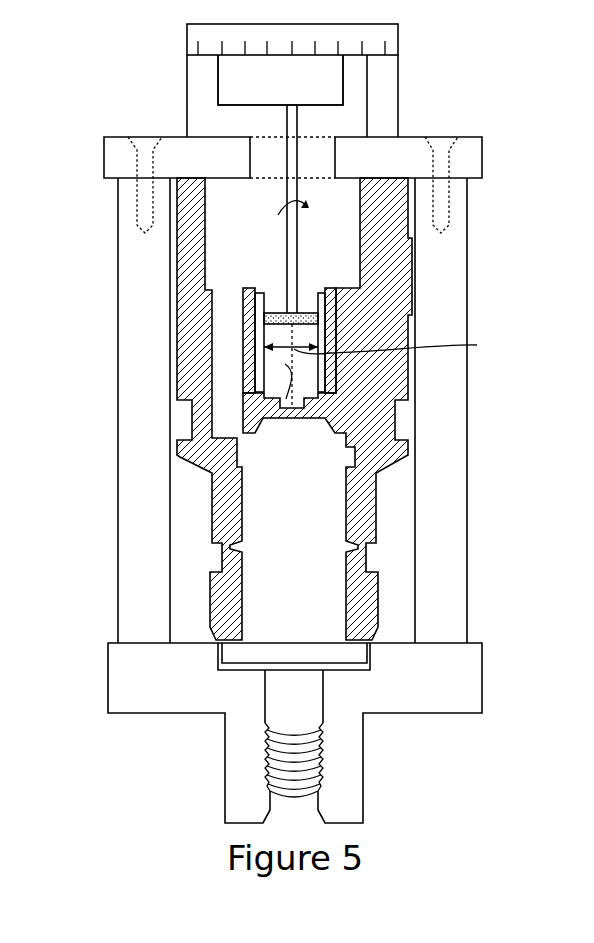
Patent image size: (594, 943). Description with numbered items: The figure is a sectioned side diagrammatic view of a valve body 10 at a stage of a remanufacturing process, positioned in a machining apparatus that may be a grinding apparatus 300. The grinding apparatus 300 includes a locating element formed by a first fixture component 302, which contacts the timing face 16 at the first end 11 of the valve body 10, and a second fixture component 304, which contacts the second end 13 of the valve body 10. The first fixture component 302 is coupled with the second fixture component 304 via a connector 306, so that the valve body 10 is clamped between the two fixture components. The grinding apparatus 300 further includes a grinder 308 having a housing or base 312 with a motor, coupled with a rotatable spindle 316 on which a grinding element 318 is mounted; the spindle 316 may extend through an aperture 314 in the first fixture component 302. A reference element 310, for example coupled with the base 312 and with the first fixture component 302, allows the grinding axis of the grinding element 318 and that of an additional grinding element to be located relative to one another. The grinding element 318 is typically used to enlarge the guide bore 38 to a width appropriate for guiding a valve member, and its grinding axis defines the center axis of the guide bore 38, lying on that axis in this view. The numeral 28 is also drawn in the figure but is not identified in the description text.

The grinding apparatus 300 is at (529, 121).
The first fixture component 302 is at (472, 163).
The second fixture component 304 is at (468, 692).
The connector 306 is at (443, 590).
The grinder 308 is at (324, 82).
The reference element 310 is at (187, 40).
The base 312 is at (252, 89).
The aperture 314 is at (252, 180).
The spindle 316 is at (298, 250).
The grinding element 318 is at (278, 312).
The valve body 10 is at (375, 373).
The first end 11 is at (404, 174).
The second end 13 is at (232, 650).
The timing face 16 is at (189, 174).
The liner 28 is at (257, 332).
The guide bore 38 is at (322, 368).